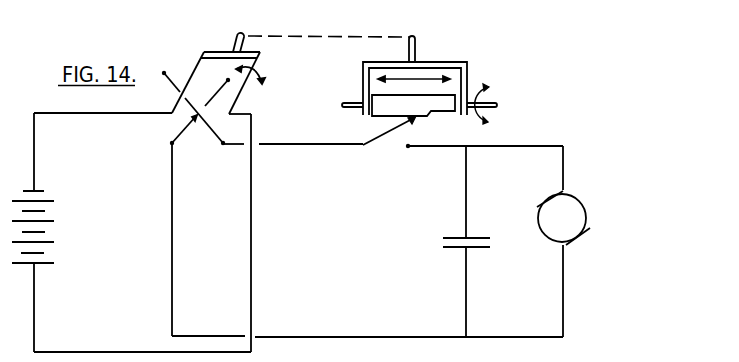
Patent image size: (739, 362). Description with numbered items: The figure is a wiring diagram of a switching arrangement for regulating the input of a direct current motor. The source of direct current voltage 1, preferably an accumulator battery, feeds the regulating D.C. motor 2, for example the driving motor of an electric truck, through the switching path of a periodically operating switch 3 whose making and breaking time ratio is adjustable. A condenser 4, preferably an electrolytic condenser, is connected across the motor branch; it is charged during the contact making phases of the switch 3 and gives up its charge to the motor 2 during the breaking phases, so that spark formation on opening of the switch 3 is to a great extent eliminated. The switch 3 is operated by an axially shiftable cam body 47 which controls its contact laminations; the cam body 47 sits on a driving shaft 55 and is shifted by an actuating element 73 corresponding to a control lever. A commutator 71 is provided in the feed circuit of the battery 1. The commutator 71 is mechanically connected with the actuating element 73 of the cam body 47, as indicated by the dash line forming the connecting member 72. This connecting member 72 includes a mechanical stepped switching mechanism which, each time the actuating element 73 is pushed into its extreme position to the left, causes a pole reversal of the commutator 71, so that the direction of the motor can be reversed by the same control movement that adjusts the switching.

The source of direct current voltage 1 is at (41, 227).
The motor 2 is at (558, 220).
The periodically operating switch 3 is at (398, 135).
The condenser 4 is at (455, 245).
The cam body 47 is at (381, 104).
The driving shaft 55 is at (350, 103).
The commutator 71 is at (196, 87).
The connecting member 72 is at (328, 26).
The actuating element 73 is at (466, 86).